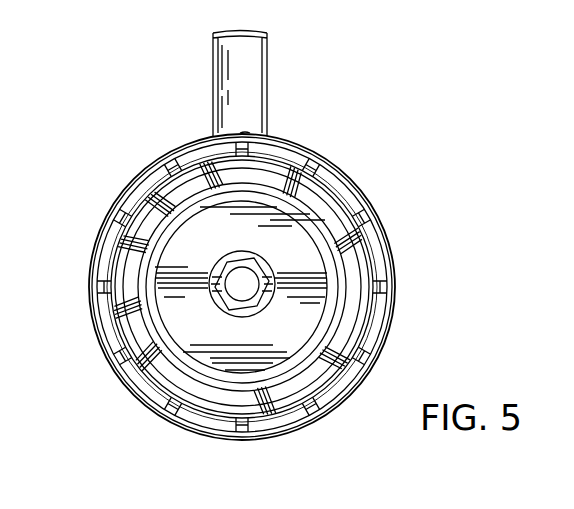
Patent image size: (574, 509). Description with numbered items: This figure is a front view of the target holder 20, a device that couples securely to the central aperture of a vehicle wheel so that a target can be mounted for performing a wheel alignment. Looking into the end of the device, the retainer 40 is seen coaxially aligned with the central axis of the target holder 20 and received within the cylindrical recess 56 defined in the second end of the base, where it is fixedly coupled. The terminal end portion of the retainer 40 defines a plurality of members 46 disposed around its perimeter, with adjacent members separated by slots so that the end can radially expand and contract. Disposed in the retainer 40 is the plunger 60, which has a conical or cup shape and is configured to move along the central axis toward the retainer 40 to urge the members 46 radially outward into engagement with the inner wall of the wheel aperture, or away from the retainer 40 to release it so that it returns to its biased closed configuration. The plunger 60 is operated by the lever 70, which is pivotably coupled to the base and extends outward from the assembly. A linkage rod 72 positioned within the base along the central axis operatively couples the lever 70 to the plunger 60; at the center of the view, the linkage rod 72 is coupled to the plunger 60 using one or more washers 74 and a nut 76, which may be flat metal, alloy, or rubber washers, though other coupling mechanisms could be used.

The target holder 20 is at (410, 102).
The retainer 40 is at (394, 300).
The members 46 is at (118, 198).
The cylindrical recess 56 is at (372, 206).
The plunger 60 is at (366, 356).
The lever 70 is at (213, 74).
The linkage rod 72 is at (252, 294).
The washers 74 is at (250, 253).
The nut 76 is at (262, 266).